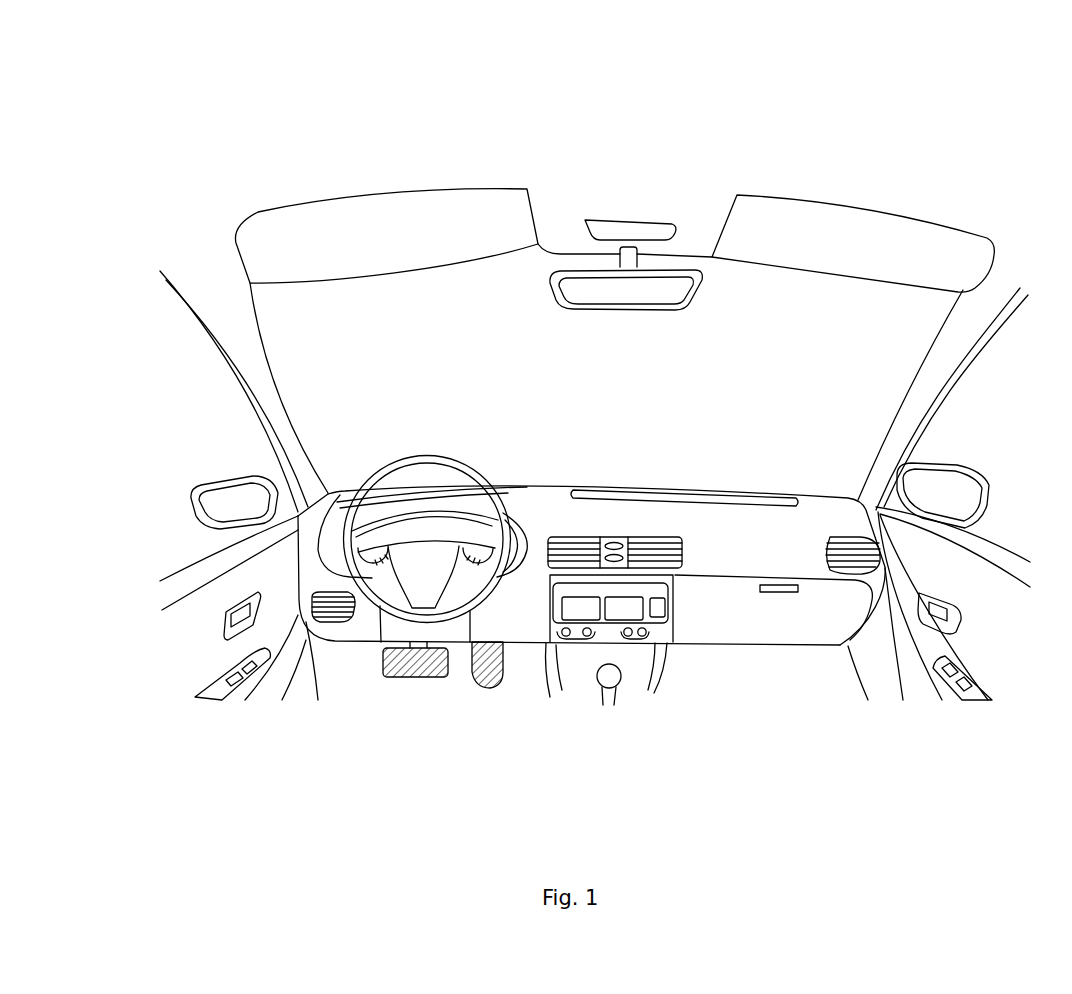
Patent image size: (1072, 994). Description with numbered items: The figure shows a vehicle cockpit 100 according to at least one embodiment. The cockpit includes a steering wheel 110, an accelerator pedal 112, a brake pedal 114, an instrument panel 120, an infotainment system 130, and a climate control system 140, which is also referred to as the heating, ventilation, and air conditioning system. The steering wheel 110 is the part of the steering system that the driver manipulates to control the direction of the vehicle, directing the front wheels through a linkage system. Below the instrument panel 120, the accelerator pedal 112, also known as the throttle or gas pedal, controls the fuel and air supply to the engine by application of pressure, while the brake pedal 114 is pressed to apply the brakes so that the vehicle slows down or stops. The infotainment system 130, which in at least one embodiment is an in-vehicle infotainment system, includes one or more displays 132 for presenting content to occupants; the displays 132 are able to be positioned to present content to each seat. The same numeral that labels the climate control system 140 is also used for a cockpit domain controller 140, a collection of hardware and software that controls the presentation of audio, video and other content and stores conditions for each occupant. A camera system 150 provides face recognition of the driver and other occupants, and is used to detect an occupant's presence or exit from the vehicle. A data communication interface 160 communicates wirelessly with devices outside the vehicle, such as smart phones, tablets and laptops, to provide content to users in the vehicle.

The vehicle cockpit 100 is at (108, 61).
The steering wheel 110 is at (423, 455).
The accelerator pedal 112 is at (477, 687).
The brake pedal 114 is at (423, 680).
The instrument panel 120 is at (520, 523).
The infotainment system 130 is at (658, 625).
The display 132 is at (558, 613).
The climate control system 140 is at (617, 620).
The camera system 150 is at (578, 641).
The data communication interface 160 is at (670, 613).